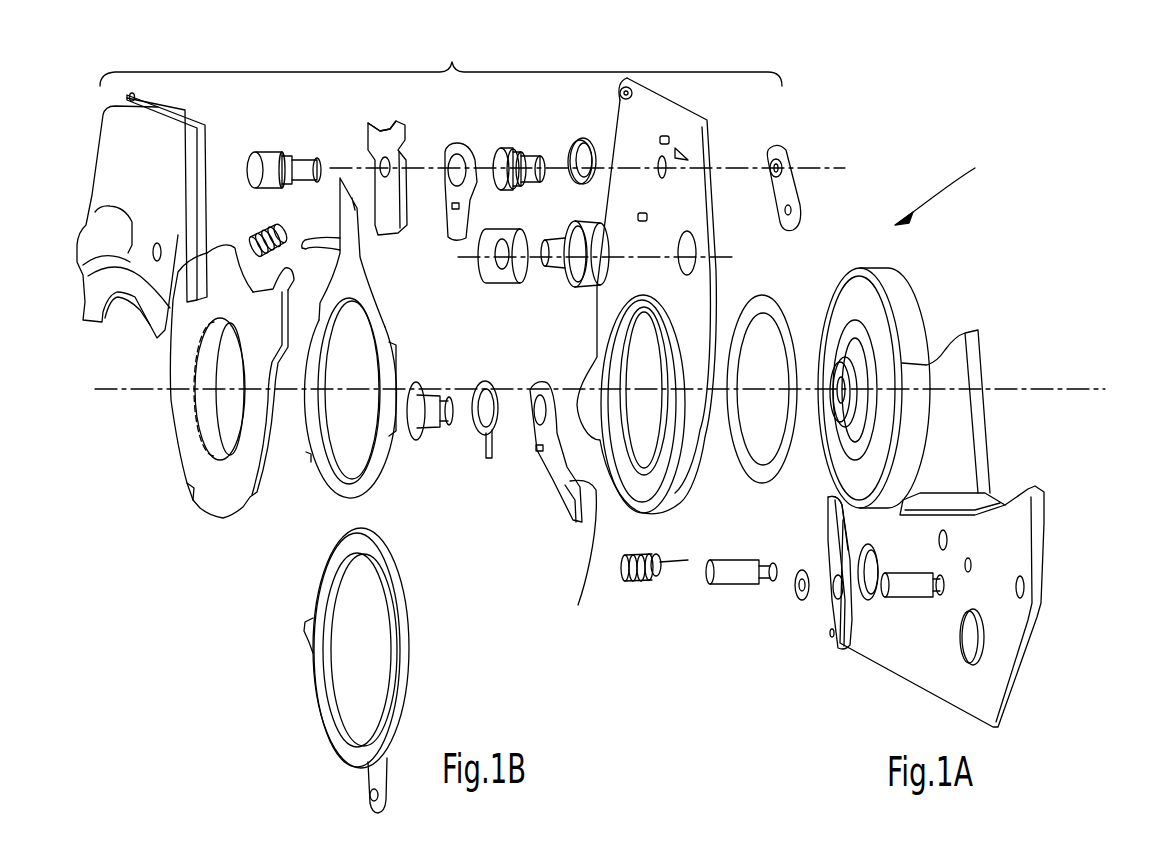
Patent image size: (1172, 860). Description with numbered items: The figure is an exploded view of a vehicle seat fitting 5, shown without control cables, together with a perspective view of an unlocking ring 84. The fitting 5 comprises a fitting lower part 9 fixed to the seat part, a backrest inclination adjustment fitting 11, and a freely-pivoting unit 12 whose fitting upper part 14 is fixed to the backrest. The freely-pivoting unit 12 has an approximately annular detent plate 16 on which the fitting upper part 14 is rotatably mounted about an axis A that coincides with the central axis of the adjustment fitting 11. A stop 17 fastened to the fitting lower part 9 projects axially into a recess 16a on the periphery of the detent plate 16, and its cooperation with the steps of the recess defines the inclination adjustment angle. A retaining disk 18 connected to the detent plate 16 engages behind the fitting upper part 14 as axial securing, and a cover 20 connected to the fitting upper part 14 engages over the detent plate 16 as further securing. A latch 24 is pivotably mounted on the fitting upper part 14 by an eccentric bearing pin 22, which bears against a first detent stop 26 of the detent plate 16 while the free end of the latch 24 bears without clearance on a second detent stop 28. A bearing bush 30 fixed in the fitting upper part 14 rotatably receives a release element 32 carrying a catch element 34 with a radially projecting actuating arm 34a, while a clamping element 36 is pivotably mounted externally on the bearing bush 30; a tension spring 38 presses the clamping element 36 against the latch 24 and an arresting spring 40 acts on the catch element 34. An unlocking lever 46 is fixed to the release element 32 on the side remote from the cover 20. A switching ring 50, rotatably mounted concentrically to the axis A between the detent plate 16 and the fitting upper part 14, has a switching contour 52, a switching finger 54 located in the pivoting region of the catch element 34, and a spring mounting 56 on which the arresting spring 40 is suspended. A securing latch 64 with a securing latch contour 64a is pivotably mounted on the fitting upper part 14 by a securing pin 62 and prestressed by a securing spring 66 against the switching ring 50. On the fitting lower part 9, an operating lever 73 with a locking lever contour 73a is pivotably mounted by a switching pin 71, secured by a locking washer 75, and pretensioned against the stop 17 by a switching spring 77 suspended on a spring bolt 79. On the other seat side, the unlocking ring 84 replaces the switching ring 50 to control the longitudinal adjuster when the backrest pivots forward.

In FIG. 1A, the fitting 5 is at (942, 185).
In FIG. 1A, the fitting lower part 9 is at (1002, 623).
In FIG. 1A, the adjustment fitting 11 is at (903, 322).
In FIG. 1B, the freely-pivoting unit 12 is at (441, 63).
In FIG. 1B, the fitting upper part 14 is at (657, 122).
In FIG. 1B, the detent plate 16 is at (182, 428).
In FIG. 1B, the recess 16a is at (191, 493).
In FIG. 1A, the stop 17 is at (940, 507).
In FIG. 1B, the retaining disk 18 is at (753, 478).
In FIG. 1B, the cover 20 is at (155, 137).
In FIG. 1B, the bearing pin 22 is at (575, 273).
In FIG. 1B, the latch 24 is at (493, 265).
In FIG. 1B, the first detent stop 26 is at (283, 278).
In FIG. 1B, the second detent stop 28 is at (238, 240).
In FIG. 1B, the bearing bush 30 is at (537, 160).
In FIG. 1B, the release element 32 is at (298, 160).
In FIG. 1B, the catch element 34 is at (388, 213).
In FIG. 1B, the actuating arm 34a is at (375, 122).
In FIG. 1B, the clamping element 36 is at (463, 223).
In FIG. 1B, the tension spring 38 is at (586, 135).
In FIG. 1B, the arresting spring 40 is at (258, 230).
In FIG. 1A, the unlocking lever 46 is at (785, 197).
In FIG. 1B, the switching ring 50 is at (385, 342).
In FIG. 1B, the switching contour 52 is at (328, 492).
In FIG. 1B, the switching finger 54 is at (353, 188).
In FIG. 1B, the spring mounting 56 is at (325, 230).
In FIG. 1B, the securing pin 62 is at (417, 420).
In FIG. 1B, the securing latch 64 is at (548, 463).
In FIG. 1B, the securing latch contour 64a is at (593, 520).
In FIG. 1B, the securing spring 66 is at (485, 447).
In FIG. 1A, the switching pin 71 is at (903, 590).
In FIG. 1A, the operating lever 73 is at (837, 613).
In FIG. 1A, the locking lever contour 73a is at (835, 548).
In FIG. 1A, the locking washer 75 is at (800, 597).
In FIG. 1A, the switching spring 77 is at (645, 582).
In FIG. 1A, the spring bolt 79 is at (733, 575).
In FIG. 1B, the unlocking ring 84 is at (397, 663).
In FIG. 1A, the axis A is at (1048, 385).